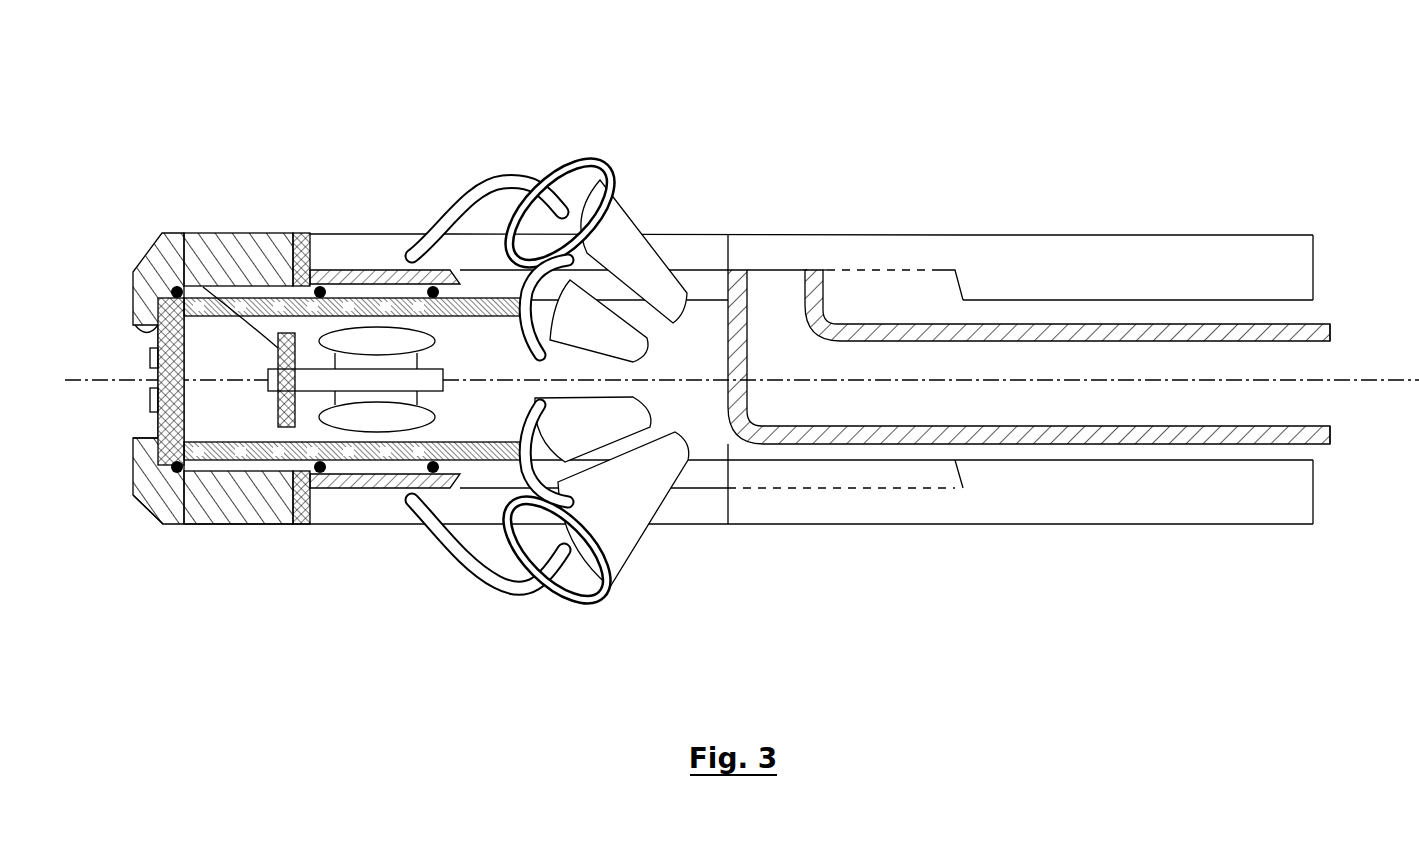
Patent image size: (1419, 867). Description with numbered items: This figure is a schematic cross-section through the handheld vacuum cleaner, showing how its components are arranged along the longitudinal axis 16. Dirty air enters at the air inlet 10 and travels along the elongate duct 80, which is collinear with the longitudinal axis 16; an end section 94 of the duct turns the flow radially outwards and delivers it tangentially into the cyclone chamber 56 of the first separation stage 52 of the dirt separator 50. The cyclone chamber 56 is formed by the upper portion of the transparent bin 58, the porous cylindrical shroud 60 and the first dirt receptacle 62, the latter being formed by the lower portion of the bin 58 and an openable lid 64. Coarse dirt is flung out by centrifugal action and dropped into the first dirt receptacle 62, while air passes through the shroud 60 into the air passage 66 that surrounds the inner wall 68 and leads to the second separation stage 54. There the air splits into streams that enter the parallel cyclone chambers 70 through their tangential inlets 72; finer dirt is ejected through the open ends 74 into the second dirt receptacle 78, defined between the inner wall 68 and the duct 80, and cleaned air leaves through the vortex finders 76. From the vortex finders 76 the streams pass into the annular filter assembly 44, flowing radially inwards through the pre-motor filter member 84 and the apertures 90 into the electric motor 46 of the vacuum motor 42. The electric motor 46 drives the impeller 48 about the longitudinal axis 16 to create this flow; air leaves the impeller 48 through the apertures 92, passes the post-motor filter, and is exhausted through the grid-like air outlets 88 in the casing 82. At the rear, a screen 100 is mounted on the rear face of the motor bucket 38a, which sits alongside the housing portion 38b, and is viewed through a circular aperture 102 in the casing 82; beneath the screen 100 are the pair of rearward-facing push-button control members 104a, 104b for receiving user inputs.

The air inlet 10 is at (1343, 324).
The longitudinal axis 16 is at (1137, 382).
The motor bucket 38a is at (470, 296).
The lower coupling sleeve 38b is at (327, 527).
The vacuum motor 42 is at (200, 527).
The filter assembly 44 is at (158, 220).
The electric motor 46 is at (283, 333).
The impeller 48 is at (155, 240).
The dirt separator 50 is at (988, 80).
The first separation stage 52 is at (1055, 545).
The second separation stage 54 is at (560, 612).
The cyclone chamber 56 is at (851, 215).
The transparent bin 58 is at (1167, 235).
The porous cylindrical shroud 60 is at (910, 490).
The first dirt receptacle 62 is at (1268, 514).
The openable lid 64 is at (1314, 490).
The air passage 66 is at (757, 473).
The inner wall 68 is at (847, 460).
The cyclone chambers 70 is at (633, 262).
The tangential inlets 72 is at (521, 212).
The open ends 74 is at (681, 422).
The vortex finders 76 is at (493, 172).
The second dirt receptacle 78 is at (1023, 300).
The duct 80 is at (1207, 323).
The casing 82 is at (132, 493).
The pre-motor filter member 84 is at (263, 527).
The air outlets 88 is at (202, 225).
The apertures 90 is at (325, 315).
The apertures 92 is at (233, 250).
The end section 94 is at (773, 255).
The screen 100 is at (137, 322).
The aperture 102 is at (146, 444).
The control member 104a is at (150, 357).
The control member 104b is at (150, 402).